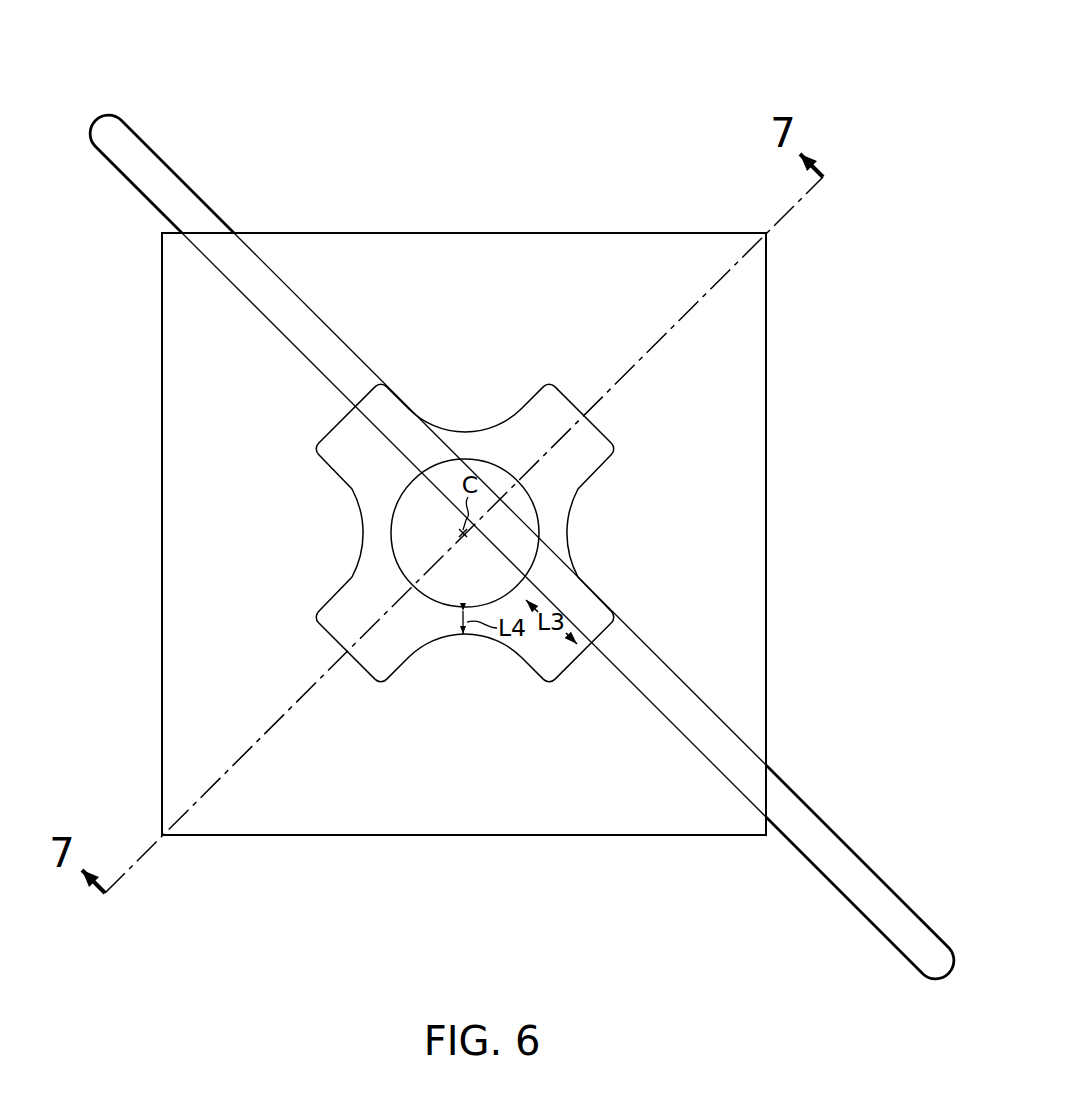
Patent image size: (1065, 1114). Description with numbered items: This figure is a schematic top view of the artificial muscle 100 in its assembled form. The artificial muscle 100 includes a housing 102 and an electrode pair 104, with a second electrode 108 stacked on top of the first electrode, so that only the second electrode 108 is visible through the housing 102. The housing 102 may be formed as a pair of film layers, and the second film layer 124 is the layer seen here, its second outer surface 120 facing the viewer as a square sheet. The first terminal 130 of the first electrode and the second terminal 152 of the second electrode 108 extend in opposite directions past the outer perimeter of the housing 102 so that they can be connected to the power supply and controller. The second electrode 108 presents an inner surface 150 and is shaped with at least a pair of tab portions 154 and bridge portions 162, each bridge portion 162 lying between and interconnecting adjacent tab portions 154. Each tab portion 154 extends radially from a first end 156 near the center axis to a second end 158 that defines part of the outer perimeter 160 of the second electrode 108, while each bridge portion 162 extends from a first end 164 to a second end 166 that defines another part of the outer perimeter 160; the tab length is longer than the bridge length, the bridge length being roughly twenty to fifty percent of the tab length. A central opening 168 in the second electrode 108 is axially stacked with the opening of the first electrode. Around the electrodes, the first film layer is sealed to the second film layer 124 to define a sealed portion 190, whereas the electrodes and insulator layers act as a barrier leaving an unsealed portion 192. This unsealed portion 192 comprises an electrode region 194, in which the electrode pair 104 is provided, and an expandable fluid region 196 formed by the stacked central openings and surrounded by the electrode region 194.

The artificial muscle 100 is at (437, 77).
The housing 102 is at (78, 392).
The electrode pair 104 is at (464, 487).
The second electrode 108 is at (265, 501).
The second outer surface 120 is at (638, 242).
The second film layer 124 is at (868, 511).
The first terminal 130 is at (134, 134).
The inner surface 150 is at (553, 392).
The second terminal 152 is at (832, 840).
The tab portion 154 is at (569, 747).
The first end 156 is at (527, 572).
The second end 158 is at (575, 660).
The outer perimeter 160 is at (597, 430).
The bridge portion 162 is at (502, 709).
The first end 164 is at (463, 603).
The second end 166 is at (444, 639).
The central opening 168 is at (400, 443).
The sealed portion 190 is at (808, 440).
The unsealed portion 192 is at (607, 502).
The electrode region 194 is at (333, 534).
The expandable fluid region 196 is at (417, 656).